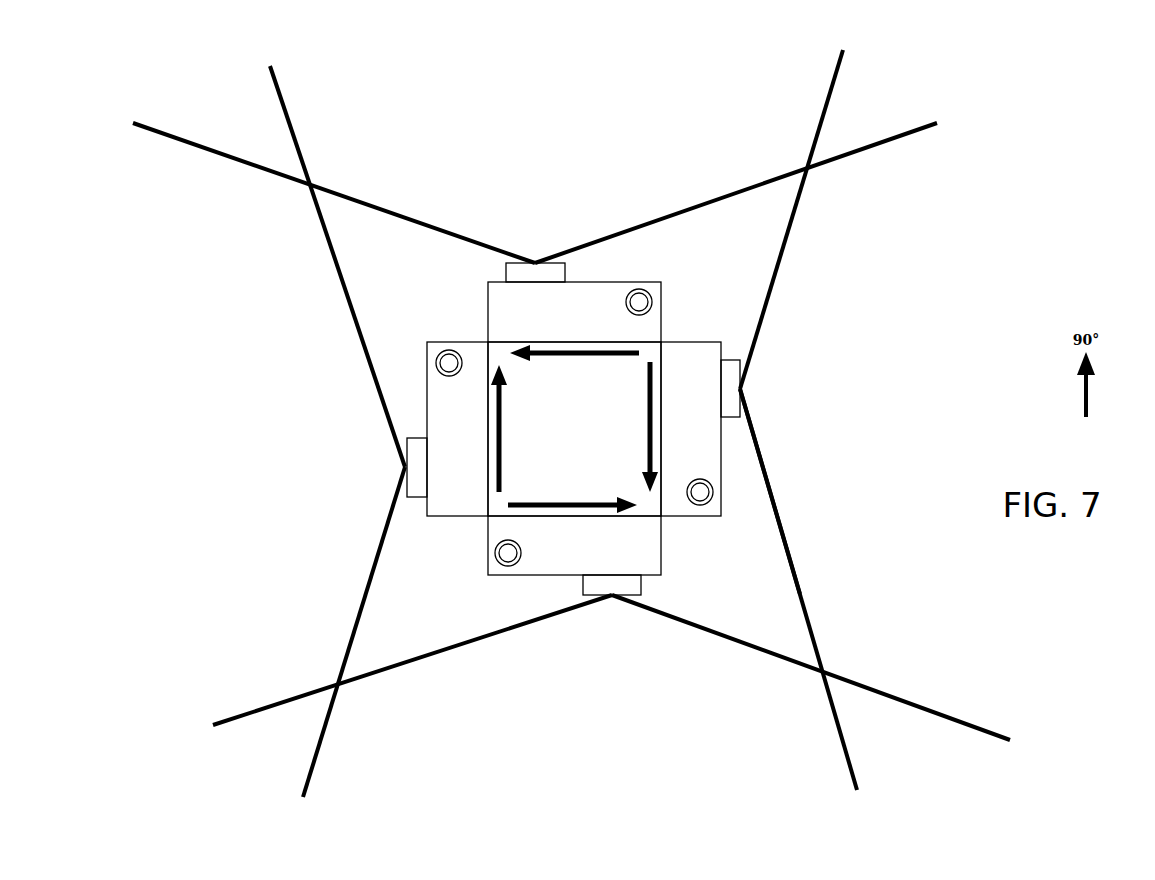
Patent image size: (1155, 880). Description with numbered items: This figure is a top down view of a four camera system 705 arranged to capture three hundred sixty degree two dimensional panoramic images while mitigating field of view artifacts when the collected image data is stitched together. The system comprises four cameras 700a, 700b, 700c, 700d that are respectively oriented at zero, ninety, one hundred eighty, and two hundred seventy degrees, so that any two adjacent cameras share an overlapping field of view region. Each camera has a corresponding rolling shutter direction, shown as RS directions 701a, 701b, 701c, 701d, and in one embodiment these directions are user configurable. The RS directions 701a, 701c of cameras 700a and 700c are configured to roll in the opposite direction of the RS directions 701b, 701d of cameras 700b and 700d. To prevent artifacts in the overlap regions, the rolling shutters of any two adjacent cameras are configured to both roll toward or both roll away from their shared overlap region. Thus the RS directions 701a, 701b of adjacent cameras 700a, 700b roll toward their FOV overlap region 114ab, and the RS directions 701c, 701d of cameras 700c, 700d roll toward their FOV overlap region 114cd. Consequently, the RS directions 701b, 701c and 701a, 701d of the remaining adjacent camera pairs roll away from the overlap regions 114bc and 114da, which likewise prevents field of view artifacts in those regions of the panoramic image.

The camera 700a is at (447, 429).
The camera 700b is at (574, 302).
The camera 700c is at (700, 429).
The camera 700d is at (574, 555).
The RS direction 701a is at (500, 410).
The RS direction 701b is at (555, 357).
The RS direction 701c is at (645, 410).
The RS direction 701d is at (603, 500).
The FOV overlap region 114ab is at (136, 94).
The overlap region 114bc is at (937, 96).
The FOV overlap region 114cd is at (975, 753).
The overlap region 114da is at (216, 751).
The four camera system 705 is at (810, 438).